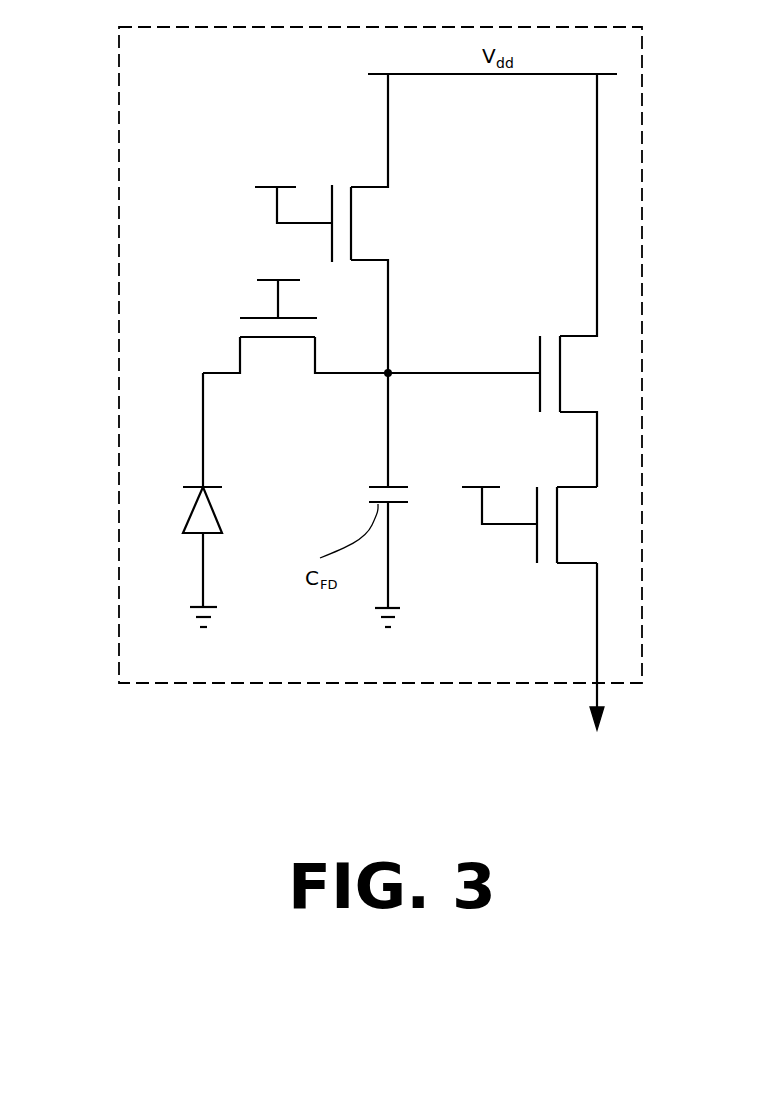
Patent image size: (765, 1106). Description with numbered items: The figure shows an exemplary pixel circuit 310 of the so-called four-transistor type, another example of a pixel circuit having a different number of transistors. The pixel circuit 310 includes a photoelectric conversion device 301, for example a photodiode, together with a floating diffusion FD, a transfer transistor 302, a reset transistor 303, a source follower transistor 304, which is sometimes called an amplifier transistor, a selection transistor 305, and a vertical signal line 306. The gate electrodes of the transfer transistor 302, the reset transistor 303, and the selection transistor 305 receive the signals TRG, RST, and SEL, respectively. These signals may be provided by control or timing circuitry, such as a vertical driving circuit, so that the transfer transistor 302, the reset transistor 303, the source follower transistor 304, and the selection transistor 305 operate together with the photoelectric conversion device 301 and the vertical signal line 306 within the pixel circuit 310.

The photoelectric conversion device 301 is at (188, 517).
The transfer transistor 302 is at (238, 347).
The reset transistor 303 is at (351, 187).
The source follower transistor 304 is at (597, 336).
The selection transistor 305 is at (597, 487).
The vertical signal line 306 is at (597, 598).
The pixel circuit 310 is at (173, 56).